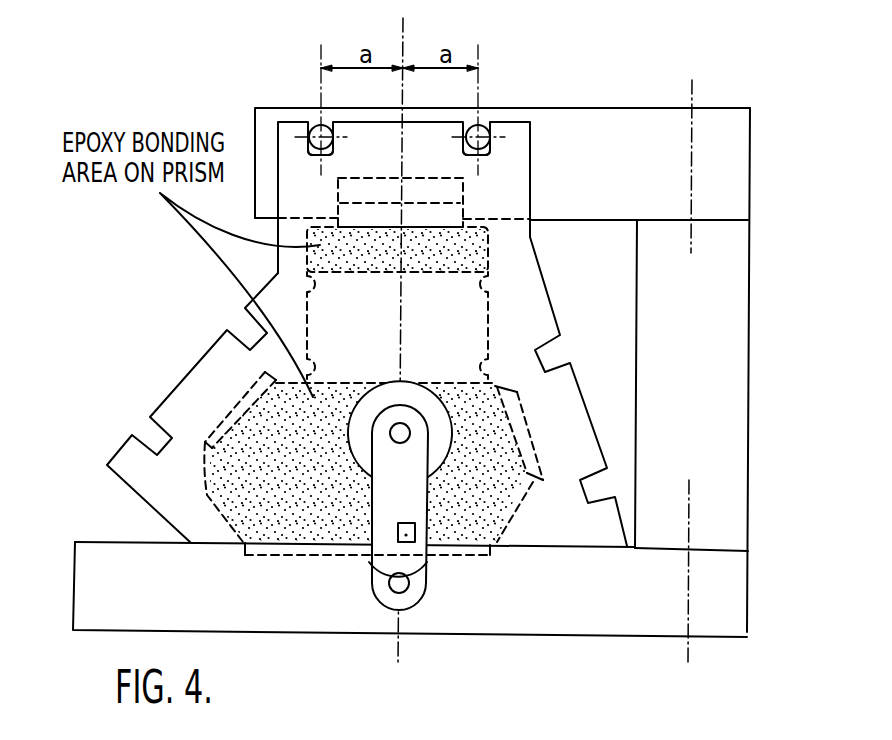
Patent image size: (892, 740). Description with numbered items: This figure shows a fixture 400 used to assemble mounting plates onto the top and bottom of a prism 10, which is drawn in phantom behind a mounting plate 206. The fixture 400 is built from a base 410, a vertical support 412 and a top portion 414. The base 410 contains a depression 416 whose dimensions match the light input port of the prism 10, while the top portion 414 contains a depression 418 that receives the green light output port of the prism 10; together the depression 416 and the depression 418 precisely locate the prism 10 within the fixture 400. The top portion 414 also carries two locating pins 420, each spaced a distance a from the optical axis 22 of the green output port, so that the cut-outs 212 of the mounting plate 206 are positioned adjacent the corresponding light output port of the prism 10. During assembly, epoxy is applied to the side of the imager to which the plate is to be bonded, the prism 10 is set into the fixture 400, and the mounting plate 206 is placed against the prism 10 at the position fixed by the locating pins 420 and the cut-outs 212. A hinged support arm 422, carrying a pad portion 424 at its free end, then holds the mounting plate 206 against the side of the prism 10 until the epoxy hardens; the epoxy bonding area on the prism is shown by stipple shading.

The prism 10 is at (488, 335).
The optical axis 22 is at (408, 43).
The mounting plate 206 is at (197, 363).
The cut-outs 212 is at (462, 153).
The fixture 400 is at (800, 366).
The base 410 is at (748, 592).
The vertical support 412 is at (749, 492).
The top portion 414 is at (625, 108).
The depression 416 is at (270, 556).
The depression 418 is at (463, 184).
The locating pins 420 is at (312, 126).
The hinged support arm 422 is at (425, 560).
The pad portion 424 is at (406, 384).